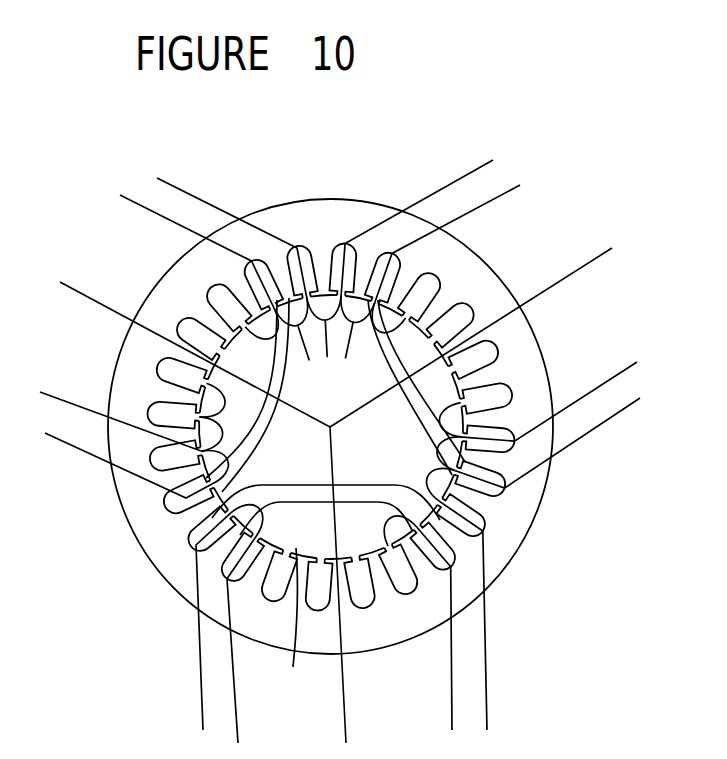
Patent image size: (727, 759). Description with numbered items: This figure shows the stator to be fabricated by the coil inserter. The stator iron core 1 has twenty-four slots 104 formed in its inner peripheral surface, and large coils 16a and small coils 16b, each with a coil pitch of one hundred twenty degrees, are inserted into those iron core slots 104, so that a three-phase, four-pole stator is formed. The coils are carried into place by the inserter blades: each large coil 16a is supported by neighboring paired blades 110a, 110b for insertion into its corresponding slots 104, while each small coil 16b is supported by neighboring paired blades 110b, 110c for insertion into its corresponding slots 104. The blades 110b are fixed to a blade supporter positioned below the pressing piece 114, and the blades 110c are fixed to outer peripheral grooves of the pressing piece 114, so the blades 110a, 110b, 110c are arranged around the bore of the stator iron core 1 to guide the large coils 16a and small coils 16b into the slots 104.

The stator iron core 1 is at (330, 200).
The large coils 16a is at (185, 192).
The small coils 16b is at (190, 231).
The slots 104 is at (437, 278).
The blades 110a is at (440, 468).
The blades 110b is at (415, 490).
The blades 110c is at (392, 534).
The pressing piece 114 is at (293, 622).